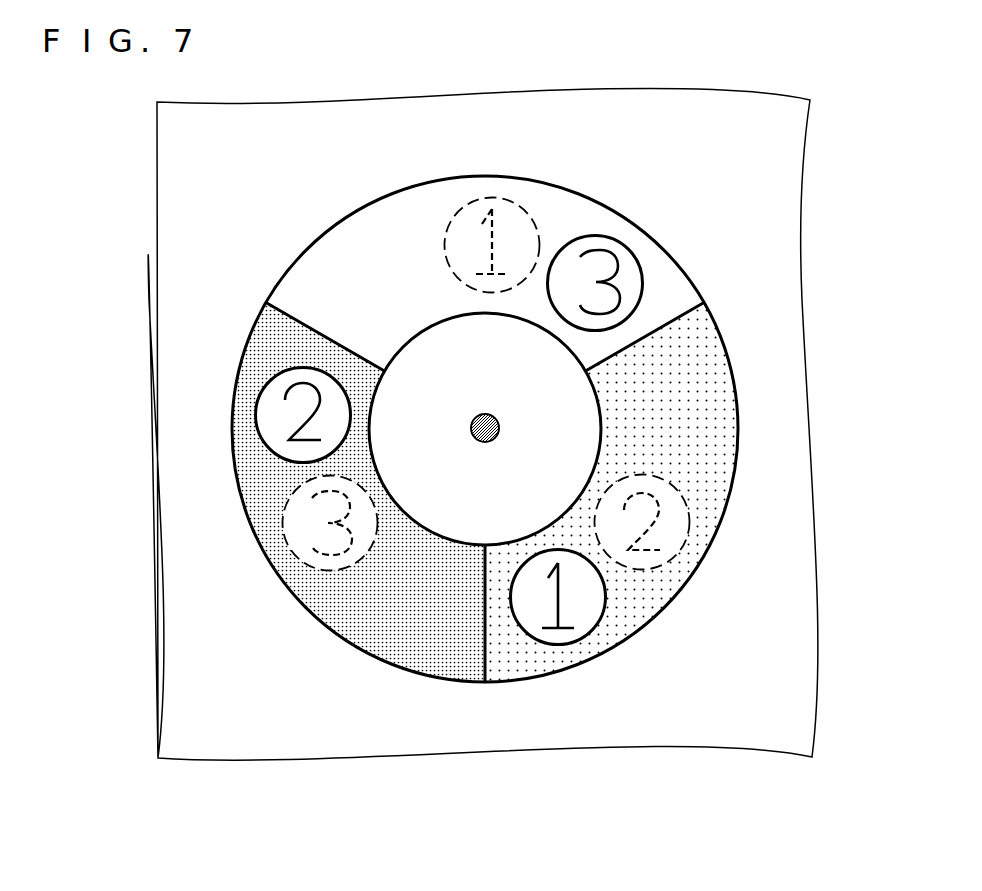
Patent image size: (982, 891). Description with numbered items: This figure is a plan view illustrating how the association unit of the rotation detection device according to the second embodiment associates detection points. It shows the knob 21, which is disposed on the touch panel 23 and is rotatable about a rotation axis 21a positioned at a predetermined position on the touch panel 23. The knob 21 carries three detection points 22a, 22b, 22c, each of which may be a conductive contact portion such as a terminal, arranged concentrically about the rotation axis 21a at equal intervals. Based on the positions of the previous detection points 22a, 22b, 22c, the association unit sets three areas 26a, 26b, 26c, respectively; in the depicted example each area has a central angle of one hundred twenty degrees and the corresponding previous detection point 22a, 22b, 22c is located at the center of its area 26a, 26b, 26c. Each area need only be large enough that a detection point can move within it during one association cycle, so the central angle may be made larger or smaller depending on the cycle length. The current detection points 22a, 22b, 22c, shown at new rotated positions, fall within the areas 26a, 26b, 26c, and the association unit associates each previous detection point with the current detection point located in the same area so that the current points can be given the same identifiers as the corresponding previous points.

The knob 21 is at (303, 252).
The rotation axis 21a is at (510, 420).
The detection point 22a is at (533, 228).
The detection point 22b is at (688, 523).
The detection point 22c is at (257, 417).
The touch panel 23 is at (795, 405).
The area 26a is at (368, 232).
The area 26b is at (712, 373).
The area 26c is at (372, 632).